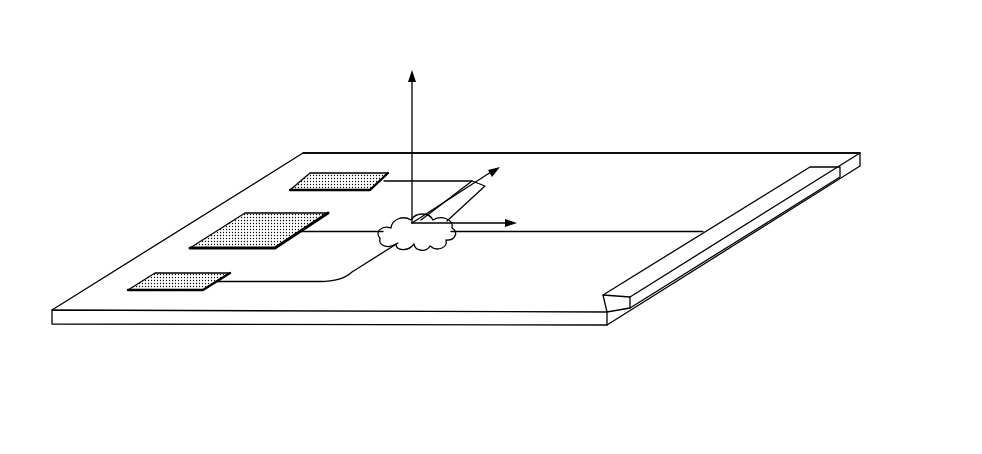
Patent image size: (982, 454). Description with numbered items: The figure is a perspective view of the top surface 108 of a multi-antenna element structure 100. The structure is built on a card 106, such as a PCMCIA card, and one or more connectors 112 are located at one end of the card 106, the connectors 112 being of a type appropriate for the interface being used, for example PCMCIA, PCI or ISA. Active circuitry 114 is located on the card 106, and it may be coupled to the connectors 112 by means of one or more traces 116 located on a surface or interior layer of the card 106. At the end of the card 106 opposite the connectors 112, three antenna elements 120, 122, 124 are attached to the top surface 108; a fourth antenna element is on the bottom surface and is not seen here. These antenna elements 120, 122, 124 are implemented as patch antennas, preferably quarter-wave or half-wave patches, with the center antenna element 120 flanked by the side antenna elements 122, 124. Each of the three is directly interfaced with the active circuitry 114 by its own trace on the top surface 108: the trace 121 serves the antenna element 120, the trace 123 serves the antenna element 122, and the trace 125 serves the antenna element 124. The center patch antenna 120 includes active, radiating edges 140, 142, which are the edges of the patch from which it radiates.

The multi-antenna element structure 100 is at (588, 97).
The card 106 is at (463, 147).
The top surface 108 is at (638, 160).
The connectors 112 is at (737, 220).
The active circuitry 114 is at (423, 243).
The traces 116 is at (563, 230).
The antenna element 120 is at (267, 215).
The trace 121 is at (335, 231).
The antenna element 122 is at (305, 185).
The trace 123 is at (398, 180).
The antenna element 124 is at (145, 280).
The trace 125 is at (270, 283).
The active edge 140 is at (217, 230).
The active edge 142 is at (283, 246).